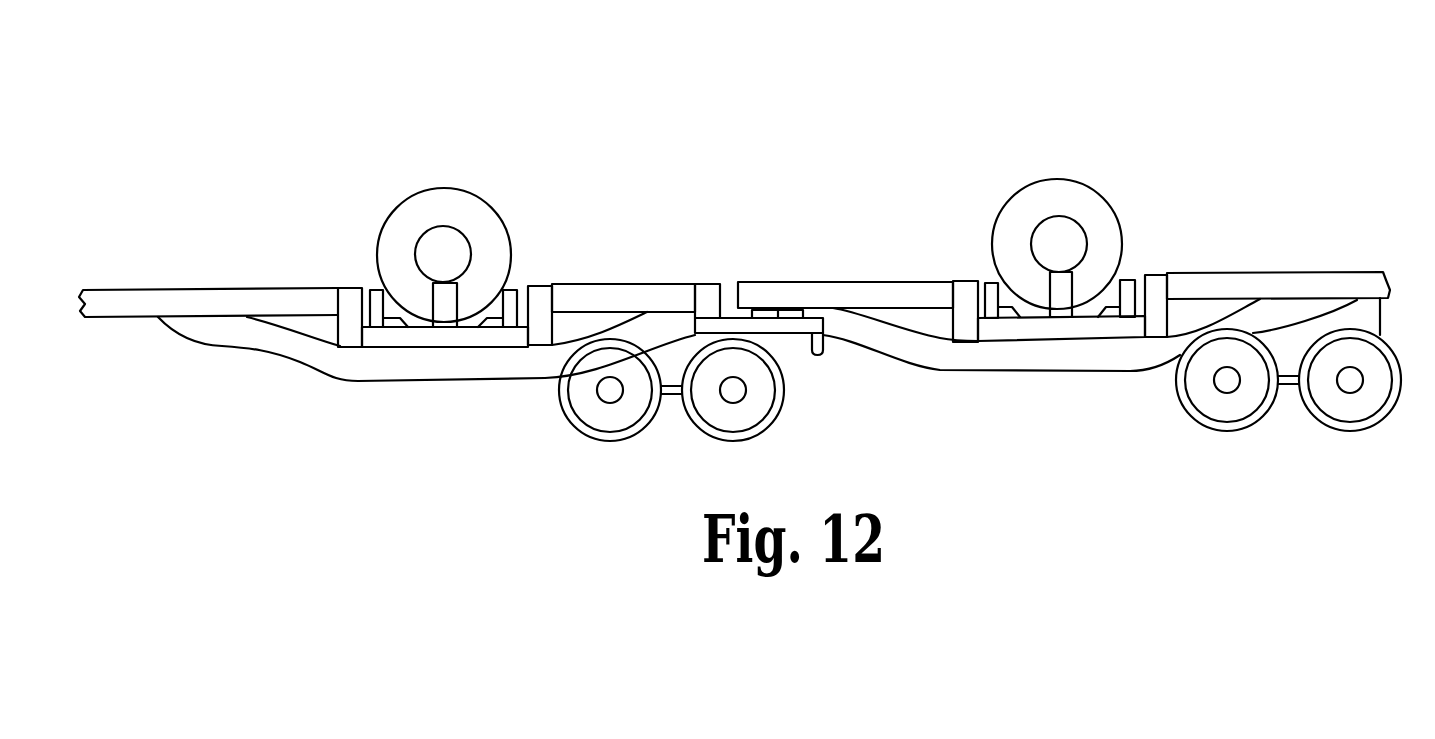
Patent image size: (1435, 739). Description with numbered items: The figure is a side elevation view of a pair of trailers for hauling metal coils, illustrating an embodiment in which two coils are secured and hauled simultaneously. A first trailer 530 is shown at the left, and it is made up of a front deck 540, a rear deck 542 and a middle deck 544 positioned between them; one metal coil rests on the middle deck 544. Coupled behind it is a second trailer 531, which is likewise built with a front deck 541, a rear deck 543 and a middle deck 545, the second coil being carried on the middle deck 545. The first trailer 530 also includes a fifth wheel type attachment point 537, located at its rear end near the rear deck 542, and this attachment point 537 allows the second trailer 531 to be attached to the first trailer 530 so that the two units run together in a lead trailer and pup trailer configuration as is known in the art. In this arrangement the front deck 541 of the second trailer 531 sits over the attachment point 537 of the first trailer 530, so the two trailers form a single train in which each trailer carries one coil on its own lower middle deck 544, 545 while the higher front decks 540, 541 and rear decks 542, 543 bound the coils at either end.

The first trailer 530 is at (580, 150).
The second trailer 531 is at (887, 77).
The fifth wheel type attachment point 537 is at (788, 318).
The front deck 540 is at (215, 288).
The front deck 541 is at (842, 282).
The rear deck 542 is at (608, 283).
The rear deck 543 is at (1303, 272).
The middle deck 544 is at (477, 328).
The middle deck 545 is at (1080, 317).